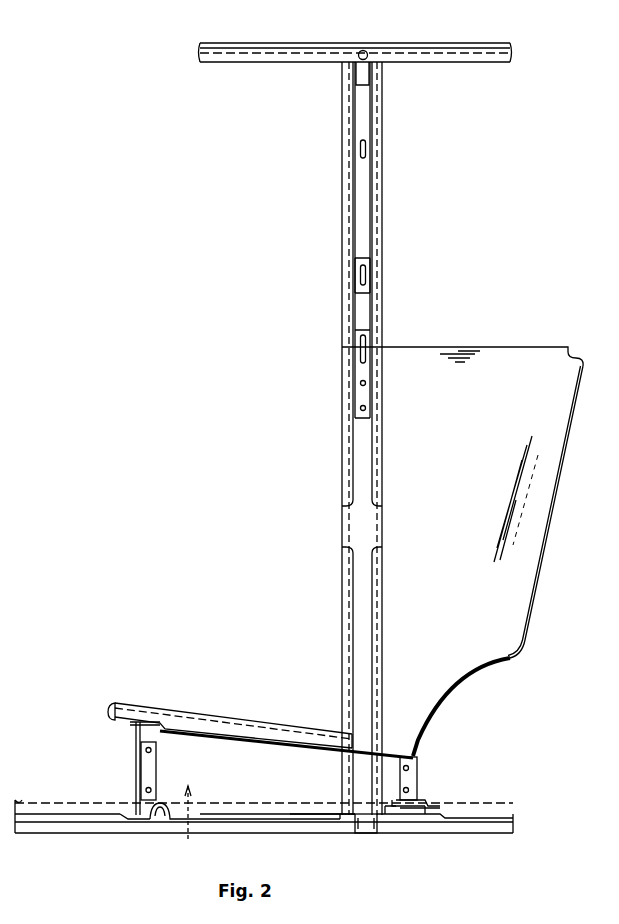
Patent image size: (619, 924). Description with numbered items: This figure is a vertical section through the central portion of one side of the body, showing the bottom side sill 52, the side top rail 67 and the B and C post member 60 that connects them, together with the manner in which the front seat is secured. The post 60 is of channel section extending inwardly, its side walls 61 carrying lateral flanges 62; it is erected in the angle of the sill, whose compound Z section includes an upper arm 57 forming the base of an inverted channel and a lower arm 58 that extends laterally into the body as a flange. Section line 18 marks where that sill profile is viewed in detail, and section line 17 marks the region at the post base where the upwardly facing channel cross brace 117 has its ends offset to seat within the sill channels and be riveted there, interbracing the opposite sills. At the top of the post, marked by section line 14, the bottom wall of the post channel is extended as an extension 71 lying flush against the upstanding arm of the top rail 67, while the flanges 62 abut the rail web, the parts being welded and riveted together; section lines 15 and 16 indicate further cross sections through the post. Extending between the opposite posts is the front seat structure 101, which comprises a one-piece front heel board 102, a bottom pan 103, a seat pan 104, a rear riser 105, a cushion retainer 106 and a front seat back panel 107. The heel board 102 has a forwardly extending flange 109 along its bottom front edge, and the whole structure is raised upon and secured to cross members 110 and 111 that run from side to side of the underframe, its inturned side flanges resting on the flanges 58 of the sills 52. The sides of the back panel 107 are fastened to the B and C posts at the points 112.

The top rail 67 is at (264, 47).
The extension 71 is at (371, 72).
The section line 14 is at (363, 100).
The section line 15 is at (327, 130).
The lateral flanges 62 is at (342, 210).
The B and C post member 60 is at (366, 248).
The side walls 61 is at (351, 309).
The securing points 112 is at (362, 372).
The section line 16 is at (308, 503).
The front seat structure 101 is at (471, 348).
The front seat back panel 107 is at (560, 474).
The section line 17 is at (367, 848).
The section line 18 is at (238, 692).
The cushion retainer 106 is at (112, 716).
The seat pan 104 is at (322, 750).
The front heel board 102 is at (137, 780).
The rear riser 105 is at (418, 768).
The side sill 52 is at (22, 814).
The bottom pan 103 is at (212, 815).
The forwardly extending flange 109 is at (128, 813).
The cross member 110 is at (152, 812).
The upper arm 57 is at (192, 825).
The lower arm 58 is at (306, 818).
The cross member 111 is at (413, 808).
The channel cross brace 117 is at (358, 838).